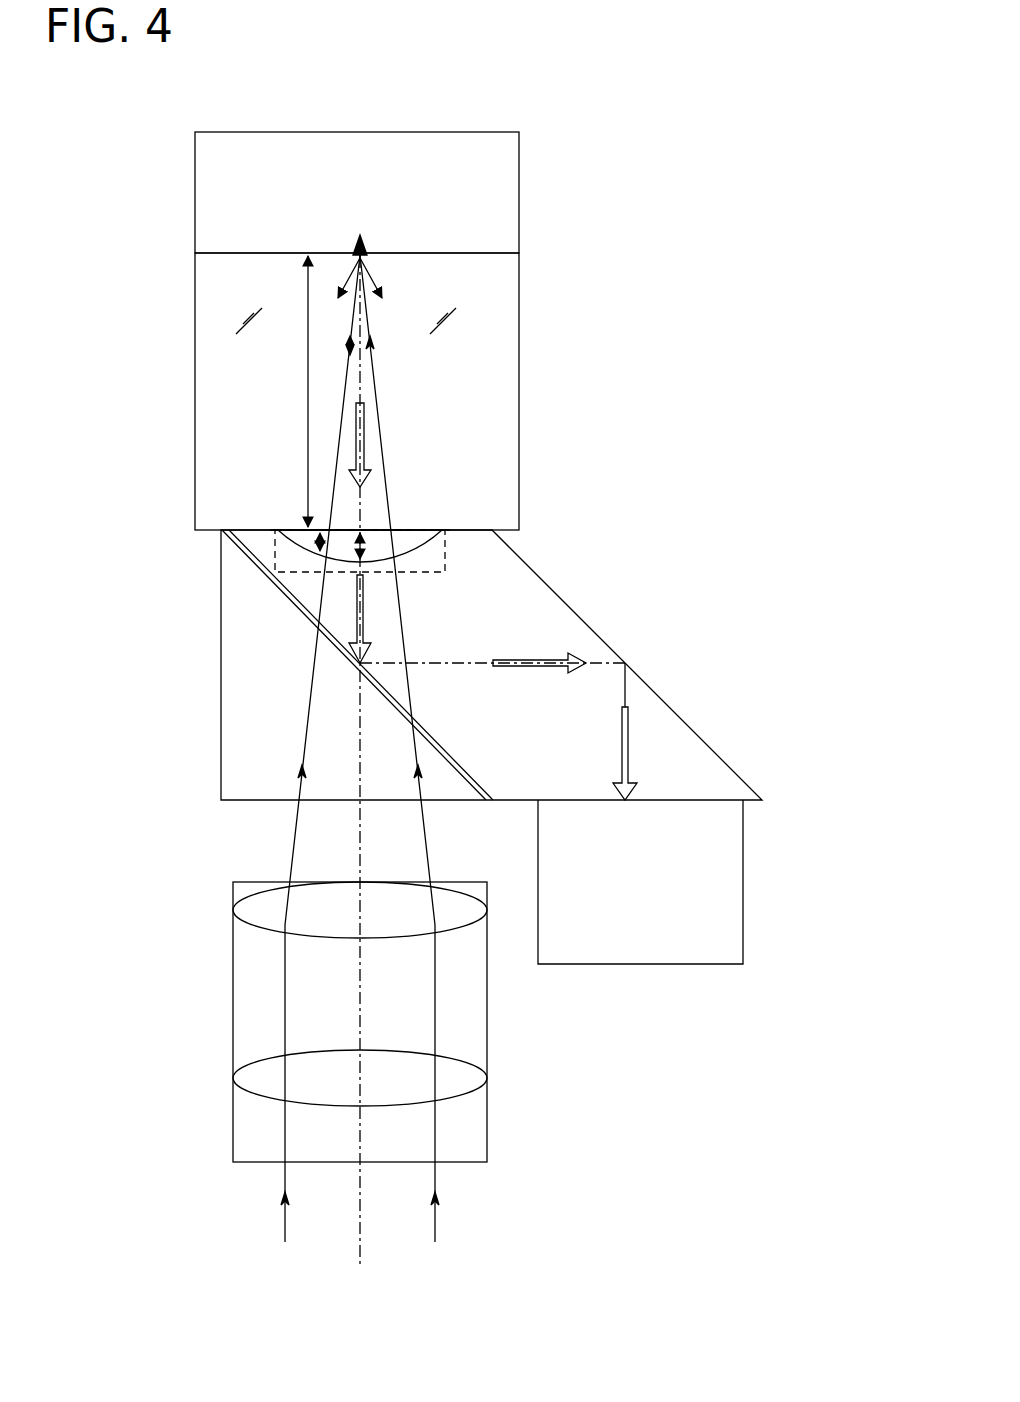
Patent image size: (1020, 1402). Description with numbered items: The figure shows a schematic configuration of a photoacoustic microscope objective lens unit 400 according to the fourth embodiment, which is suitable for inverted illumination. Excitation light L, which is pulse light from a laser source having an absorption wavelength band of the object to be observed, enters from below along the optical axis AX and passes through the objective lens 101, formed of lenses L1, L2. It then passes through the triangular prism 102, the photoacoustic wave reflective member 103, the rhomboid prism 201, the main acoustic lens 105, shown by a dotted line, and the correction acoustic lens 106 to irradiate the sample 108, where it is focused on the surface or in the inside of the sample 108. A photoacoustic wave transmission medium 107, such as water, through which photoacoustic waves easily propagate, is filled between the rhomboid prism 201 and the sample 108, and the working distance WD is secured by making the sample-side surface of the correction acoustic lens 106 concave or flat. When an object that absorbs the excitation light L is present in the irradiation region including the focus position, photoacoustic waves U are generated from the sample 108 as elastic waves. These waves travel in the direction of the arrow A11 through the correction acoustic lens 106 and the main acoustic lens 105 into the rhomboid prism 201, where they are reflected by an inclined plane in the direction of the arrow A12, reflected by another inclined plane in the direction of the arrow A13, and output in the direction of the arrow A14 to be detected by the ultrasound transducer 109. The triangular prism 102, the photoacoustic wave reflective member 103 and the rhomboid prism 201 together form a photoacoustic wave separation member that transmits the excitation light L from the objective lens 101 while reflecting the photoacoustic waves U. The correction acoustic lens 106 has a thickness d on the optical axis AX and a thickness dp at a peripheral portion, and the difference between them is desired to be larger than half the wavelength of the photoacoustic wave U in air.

The photoacoustic microscope objective lens unit 400 is at (674, 136).
The sample 108 is at (197, 201).
The photoacoustic wave transmission medium 107 is at (197, 350).
The working distance WD is at (292, 288).
The photoacoustic waves U is at (368, 272).
The optical axis AX is at (360, 848).
The excitation light L is at (435, 1220).
The arrow A11 is at (362, 423).
The correction acoustic lens 106 is at (300, 530).
The main acoustic lens 105 is at (275, 550).
The photoacoustic wave reflective member 103 is at (318, 537).
The thickness of the correction acoustic lens at a peripheral portion dp is at (356, 542).
The thickness of the correction acoustic lens on the optical axis d is at (366, 550).
The triangular prism 102 is at (221, 687).
The rhomboid prism 201 is at (566, 602).
The arrow A12 is at (367, 628).
The arrow A13 is at (542, 660).
The arrow A14 is at (630, 740).
The ultrasound transducer 109 is at (743, 878).
The objective lens 101 is at (488, 1048).
The lens L2 is at (258, 915).
The lens L1 is at (258, 1085).